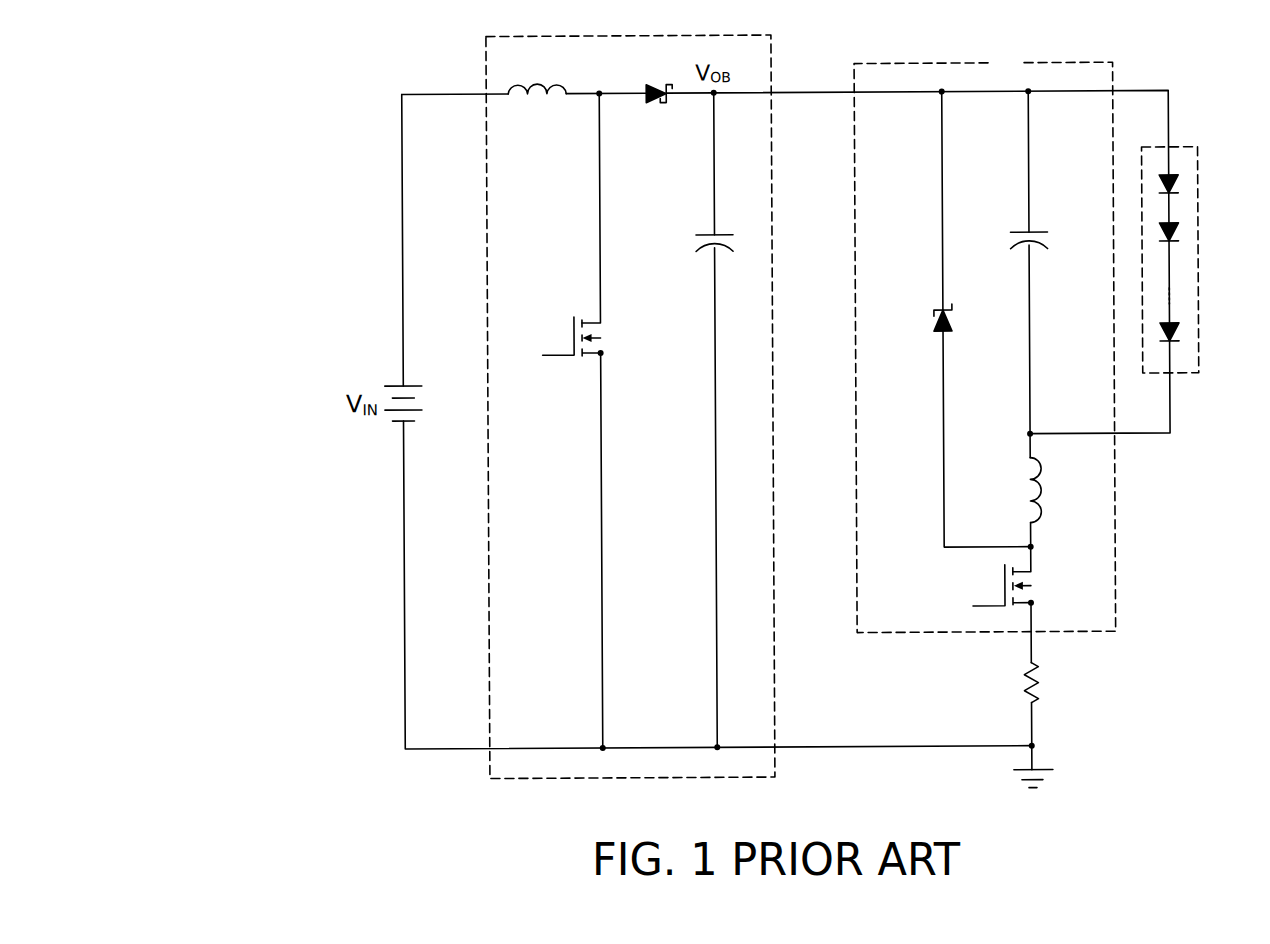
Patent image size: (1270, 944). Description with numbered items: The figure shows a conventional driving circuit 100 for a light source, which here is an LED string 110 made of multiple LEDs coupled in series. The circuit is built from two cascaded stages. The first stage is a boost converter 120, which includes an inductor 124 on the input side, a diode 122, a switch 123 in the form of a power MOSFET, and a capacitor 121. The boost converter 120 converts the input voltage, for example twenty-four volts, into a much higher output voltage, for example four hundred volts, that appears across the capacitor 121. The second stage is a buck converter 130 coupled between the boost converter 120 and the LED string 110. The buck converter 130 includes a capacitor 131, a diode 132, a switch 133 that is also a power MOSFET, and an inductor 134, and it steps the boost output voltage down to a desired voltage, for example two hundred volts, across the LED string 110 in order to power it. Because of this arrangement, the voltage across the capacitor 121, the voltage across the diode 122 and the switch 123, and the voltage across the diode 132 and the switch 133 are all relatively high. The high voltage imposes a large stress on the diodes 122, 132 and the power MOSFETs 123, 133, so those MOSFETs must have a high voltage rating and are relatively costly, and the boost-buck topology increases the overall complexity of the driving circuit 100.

The driving circuit 100 is at (268, 122).
The LED string 110 is at (1200, 259).
The boost converter 120 is at (772, 63).
The capacitor 121 is at (704, 234).
The diode 122 is at (648, 84).
The switch 123 is at (573, 328).
The inductor 124 is at (550, 86).
The buck converter 130 is at (990, 63).
The capacitor 131 is at (1036, 233).
The diode 132 is at (937, 330).
The switch 133 is at (1003, 580).
The inductor 134 is at (1041, 480).